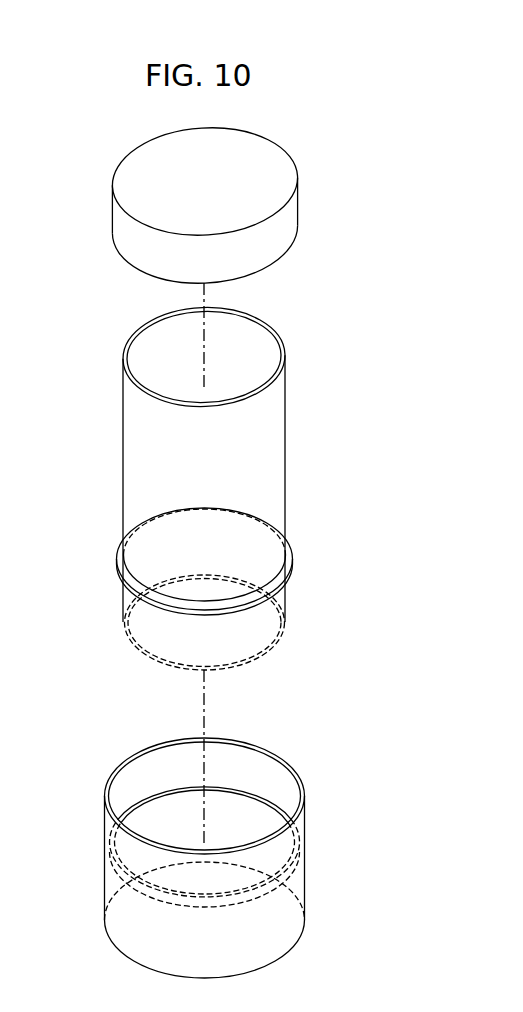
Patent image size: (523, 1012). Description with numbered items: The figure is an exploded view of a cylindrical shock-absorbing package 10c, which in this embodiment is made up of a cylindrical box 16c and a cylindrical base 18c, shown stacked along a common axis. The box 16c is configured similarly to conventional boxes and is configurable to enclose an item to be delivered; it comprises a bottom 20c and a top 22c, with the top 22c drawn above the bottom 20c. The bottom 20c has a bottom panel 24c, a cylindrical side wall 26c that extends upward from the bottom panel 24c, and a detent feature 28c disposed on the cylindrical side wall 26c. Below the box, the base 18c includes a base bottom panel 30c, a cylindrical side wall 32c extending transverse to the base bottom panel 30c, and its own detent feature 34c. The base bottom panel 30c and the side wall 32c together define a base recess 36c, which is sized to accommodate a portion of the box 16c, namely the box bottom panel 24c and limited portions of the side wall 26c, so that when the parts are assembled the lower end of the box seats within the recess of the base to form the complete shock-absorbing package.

The cylindrical shock-absorbing package 10c is at (363, 84).
The cylindrical box 16c is at (354, 288).
The cylindrical base 18c is at (350, 879).
The bottom 20c is at (344, 489).
The top 22c is at (346, 218).
The bottom panel 24c is at (253, 630).
The cylindrical side wall 26c is at (272, 385).
The detent feature 28c is at (293, 567).
The base bottom panel 30c is at (267, 942).
The cylindrical side wall 32c is at (302, 783).
The detent feature 34c is at (172, 795).
The base recess 36c is at (250, 773).